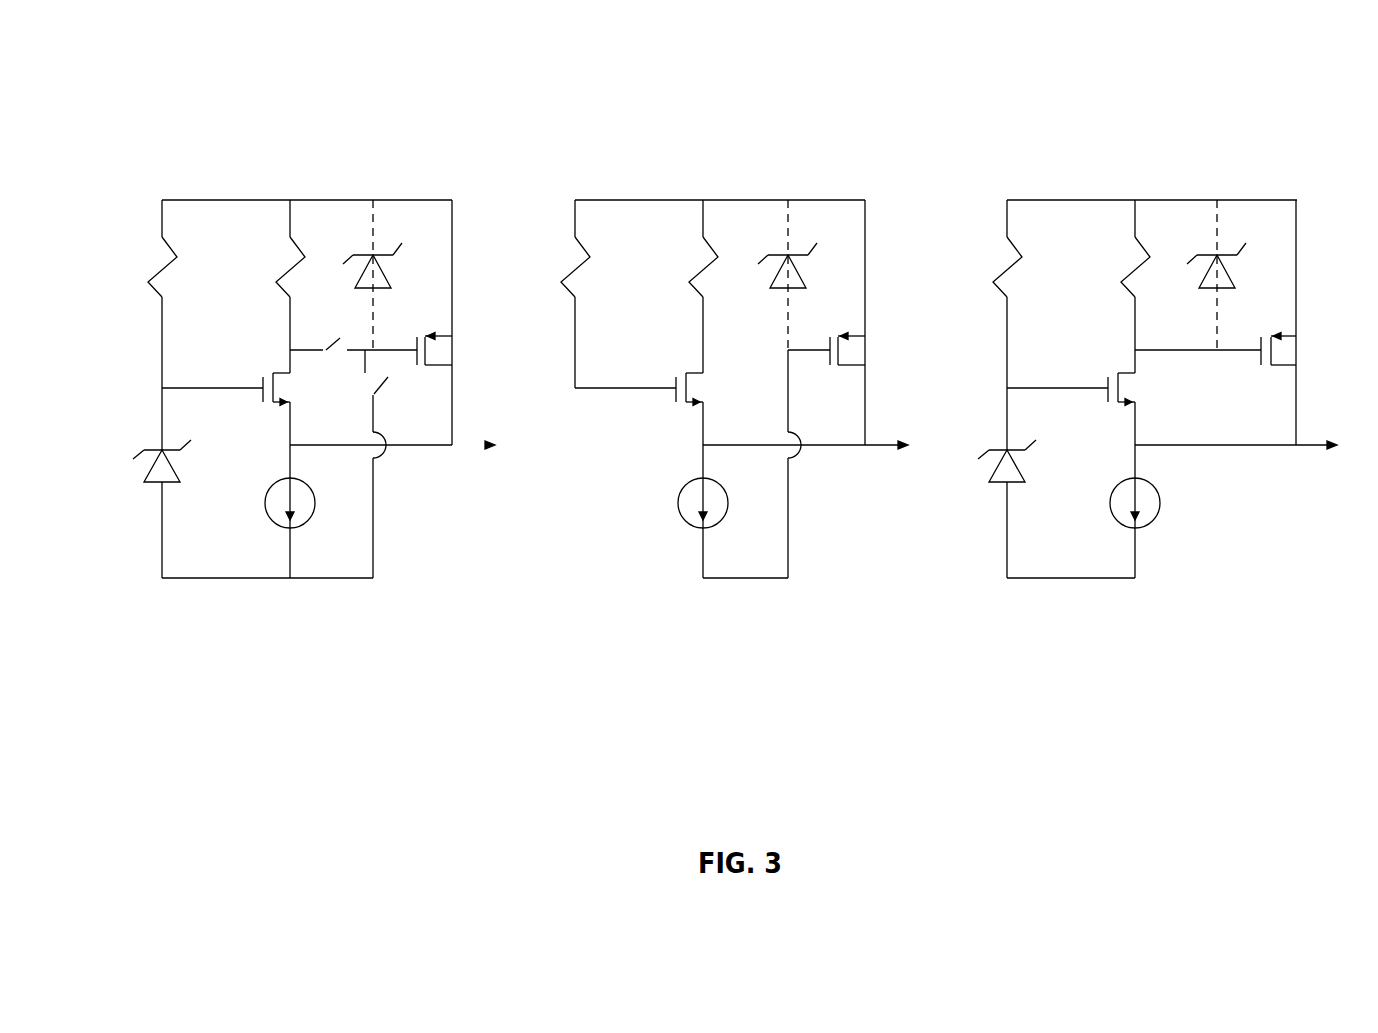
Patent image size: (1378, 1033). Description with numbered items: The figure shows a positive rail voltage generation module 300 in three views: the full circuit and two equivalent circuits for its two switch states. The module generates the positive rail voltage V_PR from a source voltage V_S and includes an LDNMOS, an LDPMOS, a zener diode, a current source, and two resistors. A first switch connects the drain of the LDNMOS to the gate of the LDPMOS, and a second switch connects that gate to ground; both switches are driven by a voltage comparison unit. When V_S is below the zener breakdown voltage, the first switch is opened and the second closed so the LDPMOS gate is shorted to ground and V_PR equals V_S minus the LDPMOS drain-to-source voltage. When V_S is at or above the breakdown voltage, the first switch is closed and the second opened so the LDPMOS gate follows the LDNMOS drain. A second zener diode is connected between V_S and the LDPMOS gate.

The positive rail voltage generation module 300 is at (1363, 77).